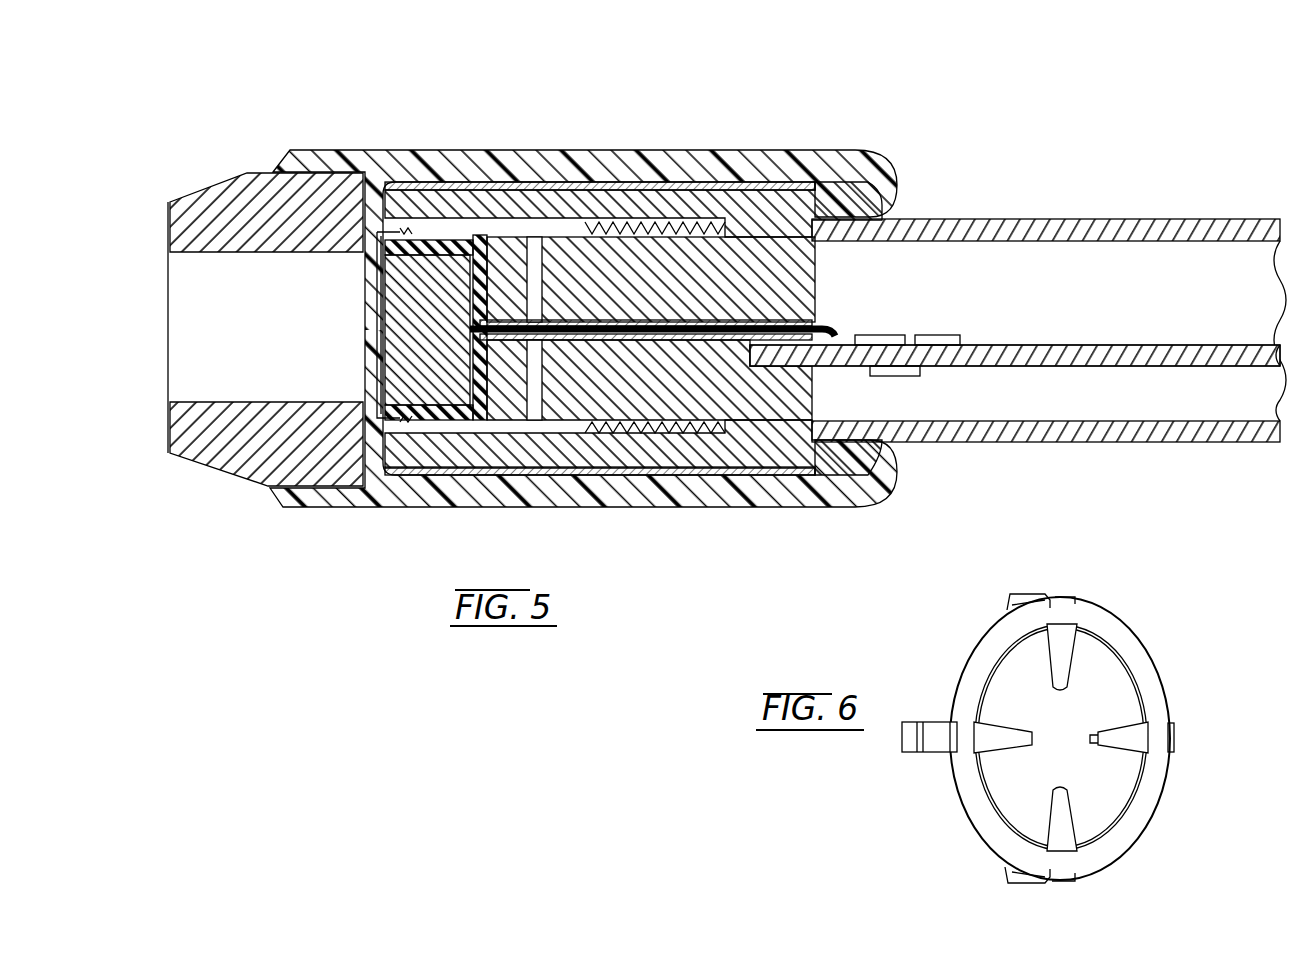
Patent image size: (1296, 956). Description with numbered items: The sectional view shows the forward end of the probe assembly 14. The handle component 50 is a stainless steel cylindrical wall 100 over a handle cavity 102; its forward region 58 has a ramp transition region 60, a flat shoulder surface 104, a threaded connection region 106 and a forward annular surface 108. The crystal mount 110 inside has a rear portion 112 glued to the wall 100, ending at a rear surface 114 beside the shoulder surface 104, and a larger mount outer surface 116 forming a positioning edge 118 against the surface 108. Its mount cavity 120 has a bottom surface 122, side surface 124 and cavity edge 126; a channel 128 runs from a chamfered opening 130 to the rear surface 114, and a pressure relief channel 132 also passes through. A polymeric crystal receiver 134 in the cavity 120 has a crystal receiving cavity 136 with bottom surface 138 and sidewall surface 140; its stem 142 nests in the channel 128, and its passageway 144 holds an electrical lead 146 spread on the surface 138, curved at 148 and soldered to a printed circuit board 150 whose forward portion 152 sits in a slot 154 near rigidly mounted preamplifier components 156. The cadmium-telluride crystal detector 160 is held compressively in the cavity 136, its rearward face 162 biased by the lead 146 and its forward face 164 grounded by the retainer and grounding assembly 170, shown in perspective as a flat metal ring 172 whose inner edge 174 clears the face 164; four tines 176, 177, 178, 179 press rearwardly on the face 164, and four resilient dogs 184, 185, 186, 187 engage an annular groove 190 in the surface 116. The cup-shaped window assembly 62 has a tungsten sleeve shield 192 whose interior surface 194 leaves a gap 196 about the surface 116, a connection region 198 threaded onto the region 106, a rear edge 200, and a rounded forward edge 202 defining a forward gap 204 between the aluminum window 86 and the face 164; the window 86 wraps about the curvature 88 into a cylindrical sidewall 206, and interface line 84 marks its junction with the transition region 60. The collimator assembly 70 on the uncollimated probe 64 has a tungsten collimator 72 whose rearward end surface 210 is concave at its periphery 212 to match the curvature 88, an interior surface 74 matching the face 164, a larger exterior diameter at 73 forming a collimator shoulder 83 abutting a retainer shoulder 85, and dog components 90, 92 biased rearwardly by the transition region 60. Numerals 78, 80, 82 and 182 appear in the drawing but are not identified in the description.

In FIG. 5, the assembly 14 is at (1013, 128).
In FIG. 5, the handle component 50 is at (1140, 219).
In FIG. 5, the forward region 58 is at (765, 527).
In FIG. 5, the transition region 60 is at (888, 195).
In FIG. 5, the window assembly 62 is at (358, 265).
In FIG. 5, the probe component 64 is at (1222, 168).
In FIG. 5, the collimator assembly 70 is at (531, 92).
In FIG. 5, the collimator 72 is at (190, 192).
In FIG. 5, the collimator exterior surface diameter 73 is at (330, 173).
In FIG. 5, the interior surface 74 is at (185, 254).
In FIG. 5, the clamp 78 is at (316, 92).
In FIG. 5, the insulator 80 is at (702, 200).
In FIG. 5, the shell 82 is at (658, 508).
In FIG. 5, the collimator shoulder 83 is at (393, 236).
In FIG. 5, the interface line 84 is at (785, 507).
In FIG. 5, the retainer shoulder 85 is at (403, 236).
In FIG. 5, the forward looking window 86 is at (385, 300).
In FIG. 5, the curvature 88 is at (383, 200).
In FIG. 5, the dog component 90 is at (878, 185).
In FIG. 5, the dog component 92 is at (878, 477).
In FIG. 5, the cylindrical wall 100 is at (995, 220).
In FIG. 5, the handle cavity 102 is at (1105, 262).
In FIG. 5, the shoulder surface 104 is at (805, 200).
In FIG. 5, the connection region 106 is at (727, 200).
In FIG. 5, the forward annular surface 108 is at (535, 425).
In FIG. 5, the crystal mount 110 is at (638, 205).
In FIG. 5, the mount rear portion 112 is at (795, 205).
In FIG. 5, the rear surface 114 is at (815, 262).
In FIG. 5, the mount outer surface 116 is at (535, 235).
In FIG. 5, the positioning edge 118 is at (565, 225).
In FIG. 5, the mount cavity 120 is at (495, 250).
In FIG. 5, the bottom surface 122 is at (455, 425).
In FIG. 5, the interior side surface 124 is at (392, 478).
In FIG. 5, the mount cavity edge 126 is at (320, 505).
In FIG. 5, the channel 128 is at (723, 345).
In FIG. 5, the chamfered opening 130 is at (490, 430).
In FIG. 5, the pressure relief and fixturing channel 132 is at (545, 240).
In FIG. 5, the crystal receiver 134 is at (437, 418).
In FIG. 5, the crystal receiving cavity 136 is at (390, 262).
In FIG. 5, the interior bottom surface 138 is at (520, 240).
In FIG. 5, the interior sidewall surface 140 is at (395, 368).
In FIG. 5, the stem 142 is at (815, 320).
In FIG. 5, the passageway 144 is at (652, 335).
In FIG. 5, the electrical lead 146 is at (755, 322).
In FIG. 5, the curved lead portion 148 is at (830, 330).
In FIG. 5, the printed circuit board 150 is at (1055, 345).
In FIG. 5, the forward portion 152 is at (790, 362).
In FIG. 5, the slot 154 is at (790, 380).
In FIG. 5, the components 156 is at (925, 331).
In FIG. 5, the crystal detector 160 is at (418, 360).
In FIG. 5, the rearward face 162 is at (478, 235).
In FIG. 5, the forward face 164 is at (378, 327).
In FIG. 5, the retainer and grounding assembly 170 is at (372, 375).
In FIG. 6, the retainer and grounding assembly 170 is at (912, 652).
In FIG. 6, the flat metal ring 172 is at (1135, 652).
In FIG. 6, the inner edge 174 is at (1135, 695).
In FIG. 6, the ground conveying tine 176 is at (1063, 668).
In FIG. 6, the ground conveying tine 177 is at (1008, 728).
In FIG. 5, the ground conveying tine 178 is at (378, 402).
In FIG. 6, the ground conveying tine 178 is at (1060, 795).
In FIG. 6, the ground conveying tine 179 is at (1118, 752).
In FIG. 6, the outer surface 182 is at (1110, 622).
In FIG. 6, the resilient dog 184 is at (1043, 592).
In FIG. 6, the resilient dog 185 is at (925, 752).
In FIG. 5, the resilient dog 186 is at (378, 418).
In FIG. 6, the resilient dog 186 is at (1035, 882).
In FIG. 6, the resilient dog 187 is at (1130, 758).
In FIG. 5, the annular groove 190 is at (413, 236).
In FIG. 5, the sleeve shield 192 is at (715, 186).
In FIG. 5, the interior surface 194 is at (580, 470).
In FIG. 5, the cylindrical gap 196 is at (560, 440).
In FIG. 5, the shield connection region 198 is at (628, 228).
In FIG. 5, the rear edge 200 is at (855, 503).
In FIG. 5, the forward edge 202 is at (346, 181).
In FIG. 5, the forward gap 204 is at (405, 350).
In FIG. 5, the cylindrical sidewall 206 is at (612, 226).
In FIG. 5, the rearward end surface 210 is at (292, 176).
In FIG. 5, the periphery 212 is at (362, 186).